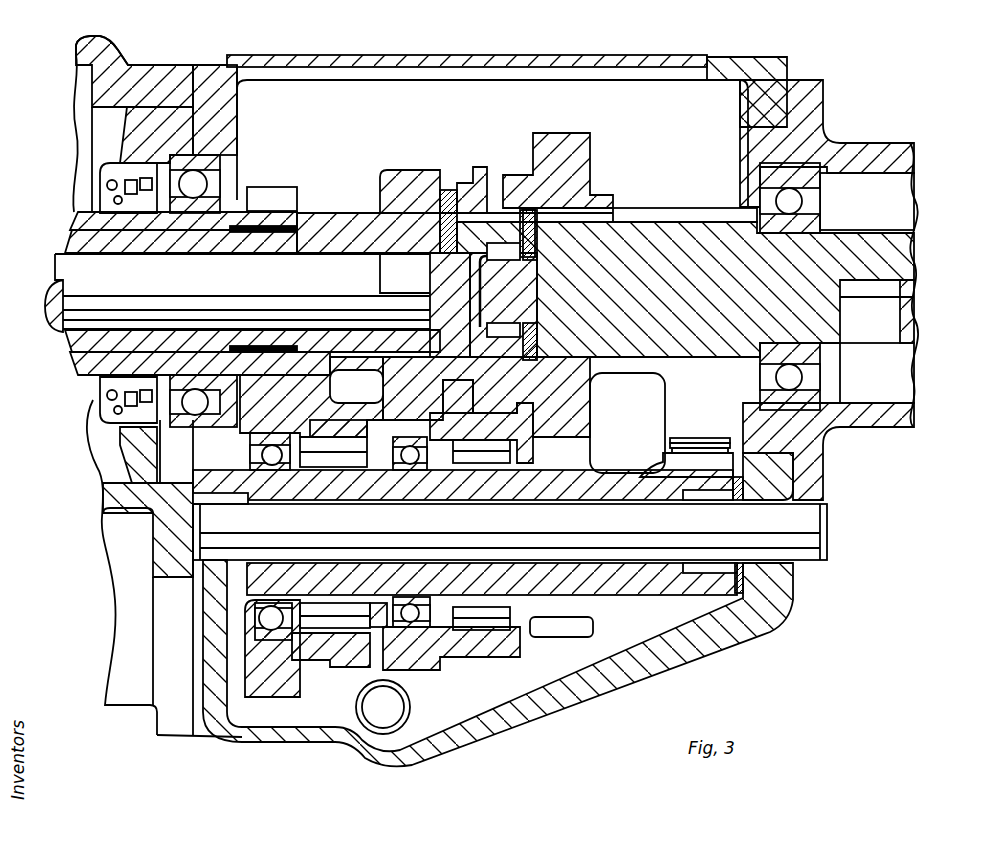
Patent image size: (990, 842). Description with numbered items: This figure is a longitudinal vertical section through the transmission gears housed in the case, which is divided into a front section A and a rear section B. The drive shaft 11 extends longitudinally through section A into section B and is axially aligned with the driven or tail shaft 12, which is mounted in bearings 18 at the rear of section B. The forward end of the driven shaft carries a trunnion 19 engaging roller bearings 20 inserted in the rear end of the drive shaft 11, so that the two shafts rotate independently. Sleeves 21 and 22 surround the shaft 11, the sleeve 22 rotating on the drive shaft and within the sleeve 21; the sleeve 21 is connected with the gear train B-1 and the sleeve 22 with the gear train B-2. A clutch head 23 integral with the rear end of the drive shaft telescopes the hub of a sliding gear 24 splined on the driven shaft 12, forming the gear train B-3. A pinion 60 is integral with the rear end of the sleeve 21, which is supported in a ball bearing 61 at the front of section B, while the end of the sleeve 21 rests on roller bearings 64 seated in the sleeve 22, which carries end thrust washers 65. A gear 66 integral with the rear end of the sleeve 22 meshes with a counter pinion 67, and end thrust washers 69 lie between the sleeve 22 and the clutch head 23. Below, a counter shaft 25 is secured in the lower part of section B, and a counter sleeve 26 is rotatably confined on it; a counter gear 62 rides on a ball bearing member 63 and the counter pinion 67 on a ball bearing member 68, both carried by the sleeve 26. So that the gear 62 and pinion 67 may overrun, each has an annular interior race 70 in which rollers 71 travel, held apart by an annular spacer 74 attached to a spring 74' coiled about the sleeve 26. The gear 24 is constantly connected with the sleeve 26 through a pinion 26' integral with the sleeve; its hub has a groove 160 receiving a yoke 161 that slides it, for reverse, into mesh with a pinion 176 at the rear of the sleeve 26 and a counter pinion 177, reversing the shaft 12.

The front section A is at (70, 86).
The rear section B is at (770, 66).
The gear train B-1 is at (272, 195).
The gear train B-2 is at (372, 200).
The gear train B-3 is at (553, 155).
The drive shaft 11 is at (62, 290).
The driven shaft 12 is at (698, 236).
The bearings 18 is at (805, 204).
The trunnion 19 is at (430, 285).
The roller bearings 20 is at (528, 260).
The sleeve 21 is at (118, 246).
The sleeve 22 is at (188, 248).
The clutch head 23 is at (490, 186).
The sliding gear 24 is at (595, 166).
The counter shaft 25 is at (820, 513).
The counter sleeve 26 is at (468, 532).
The pinion 26' is at (587, 531).
The pinion 60 is at (300, 190).
The ball bearing 61 is at (205, 157).
The counter gear 62 is at (311, 539).
The ball bearing member 63 is at (272, 440).
The roller bearings 64 is at (300, 212).
The end thrust washers 65 is at (358, 228).
The gear 66 is at (440, 186).
The counter pinion 67 is at (430, 681).
The ball bearing member 68 is at (403, 470).
The end thrust washers 69 is at (486, 330).
The annular interior race 70 is at (427, 551).
The rollers 71 is at (515, 666).
The annular spacer 74 is at (331, 535).
The spring 74' is at (335, 532).
The groove 160 is at (547, 190).
The yoke 161 is at (554, 390).
The pinion 176 is at (748, 624).
The counter pinion 177 is at (720, 445).